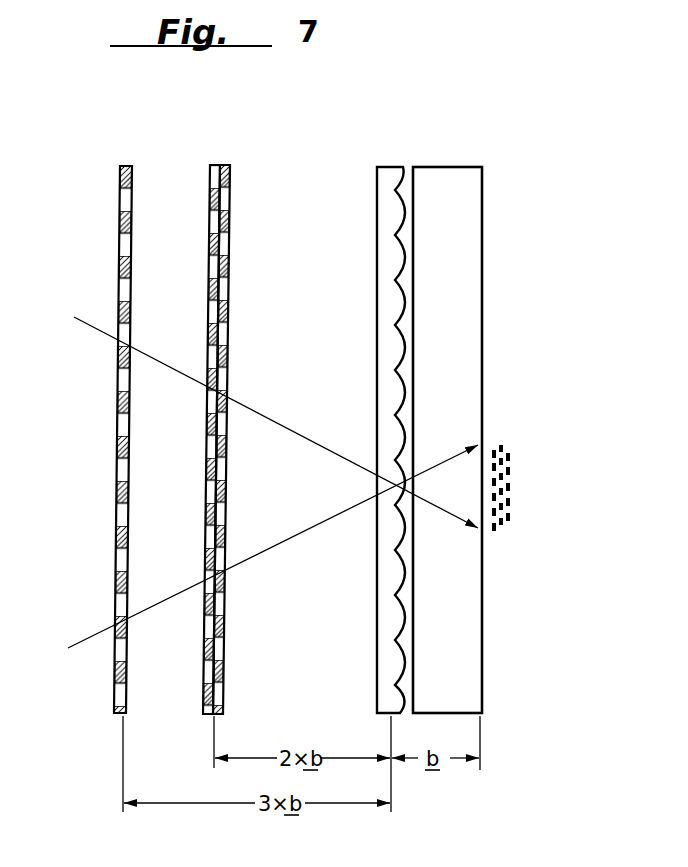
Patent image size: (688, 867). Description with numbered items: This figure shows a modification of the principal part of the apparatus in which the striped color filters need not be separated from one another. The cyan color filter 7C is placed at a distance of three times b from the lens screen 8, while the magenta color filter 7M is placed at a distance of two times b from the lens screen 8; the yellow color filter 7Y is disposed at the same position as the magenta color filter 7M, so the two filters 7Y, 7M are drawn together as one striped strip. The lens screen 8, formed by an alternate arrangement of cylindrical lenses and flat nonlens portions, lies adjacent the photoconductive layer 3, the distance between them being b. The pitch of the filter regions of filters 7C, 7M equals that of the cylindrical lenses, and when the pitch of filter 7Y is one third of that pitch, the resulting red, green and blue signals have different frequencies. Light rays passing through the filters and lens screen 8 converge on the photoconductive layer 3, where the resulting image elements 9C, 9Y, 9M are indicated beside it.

The cyan striped color filter 7C is at (129, 165).
The yellow striped color filter 7Y is at (211, 182).
The magenta striped color filter 7M is at (231, 180).
The lens screen 8 is at (388, 166).
The photoconductive layer 3 is at (482, 190).
The cyan image strip 9C is at (495, 537).
The yellow image strip 9Y is at (503, 537).
The magenta image strip 9M is at (510, 523).